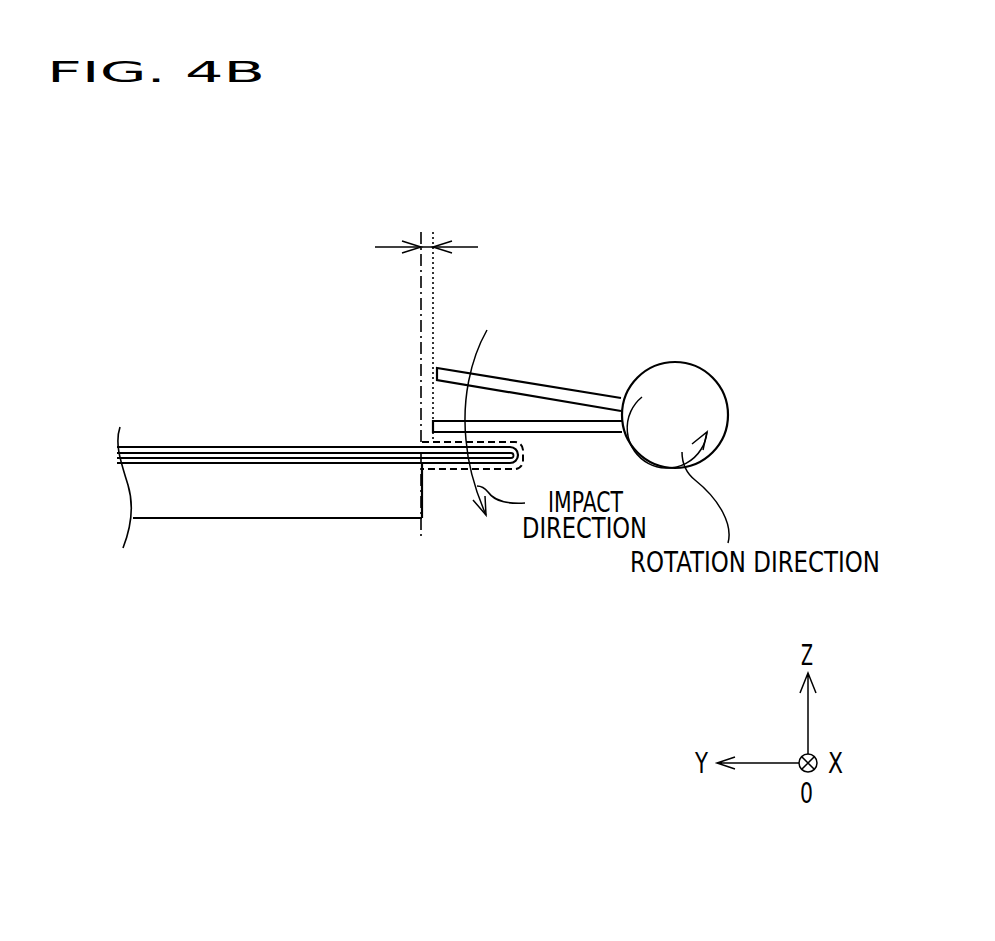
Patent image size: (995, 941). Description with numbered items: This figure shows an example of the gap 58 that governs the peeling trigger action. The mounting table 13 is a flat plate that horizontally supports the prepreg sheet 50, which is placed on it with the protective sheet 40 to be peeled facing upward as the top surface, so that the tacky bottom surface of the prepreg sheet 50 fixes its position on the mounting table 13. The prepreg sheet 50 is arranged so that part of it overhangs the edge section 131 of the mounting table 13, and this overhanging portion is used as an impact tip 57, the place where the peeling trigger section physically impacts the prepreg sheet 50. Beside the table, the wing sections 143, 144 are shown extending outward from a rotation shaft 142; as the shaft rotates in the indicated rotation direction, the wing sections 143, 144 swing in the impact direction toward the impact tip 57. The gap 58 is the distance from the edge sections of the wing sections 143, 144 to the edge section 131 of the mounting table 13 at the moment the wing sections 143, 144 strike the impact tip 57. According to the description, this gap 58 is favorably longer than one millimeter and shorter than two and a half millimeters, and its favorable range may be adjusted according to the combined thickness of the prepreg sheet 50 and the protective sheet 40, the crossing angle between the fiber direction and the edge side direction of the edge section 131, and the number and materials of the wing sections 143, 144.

The gap 58 is at (422, 232).
The wing section 144 is at (603, 405).
The wing section 143 is at (533, 427).
The rotation shaft 142 is at (755, 350).
The protective sheet 40 is at (147, 447).
The prepreg sheet 50 is at (275, 455).
The impact tip 57 is at (452, 468).
The mounting table 13 is at (180, 508).
The edge section 131 is at (422, 523).